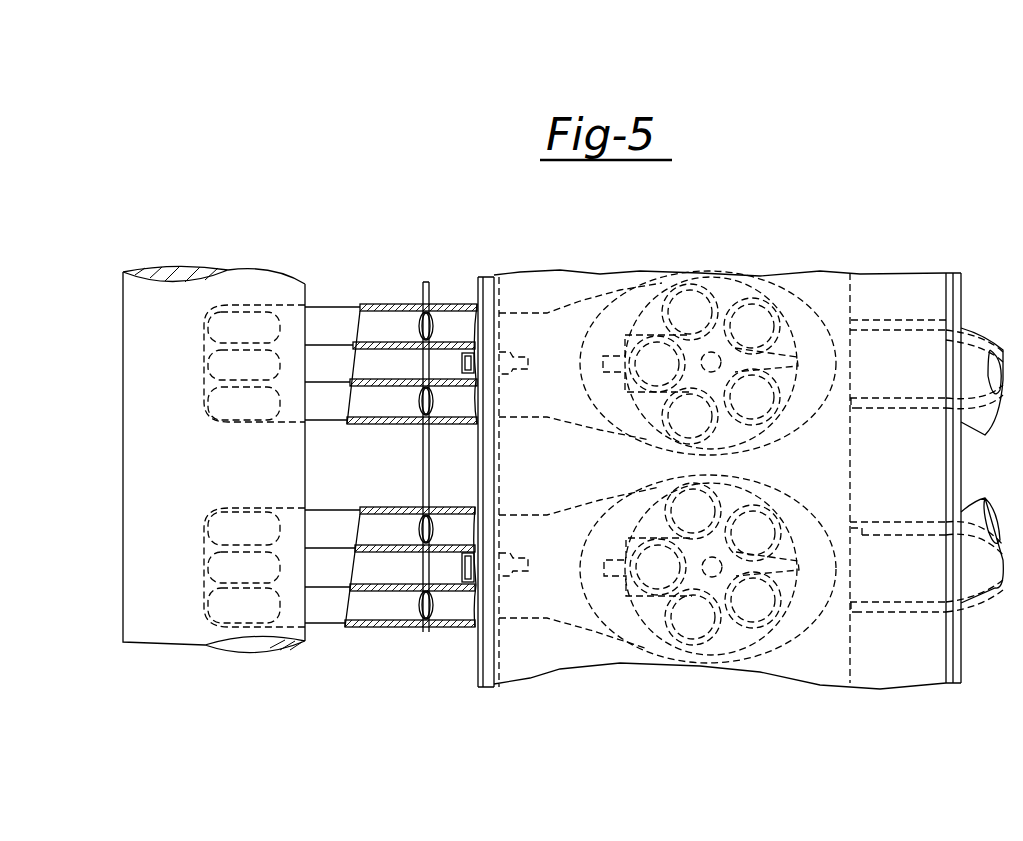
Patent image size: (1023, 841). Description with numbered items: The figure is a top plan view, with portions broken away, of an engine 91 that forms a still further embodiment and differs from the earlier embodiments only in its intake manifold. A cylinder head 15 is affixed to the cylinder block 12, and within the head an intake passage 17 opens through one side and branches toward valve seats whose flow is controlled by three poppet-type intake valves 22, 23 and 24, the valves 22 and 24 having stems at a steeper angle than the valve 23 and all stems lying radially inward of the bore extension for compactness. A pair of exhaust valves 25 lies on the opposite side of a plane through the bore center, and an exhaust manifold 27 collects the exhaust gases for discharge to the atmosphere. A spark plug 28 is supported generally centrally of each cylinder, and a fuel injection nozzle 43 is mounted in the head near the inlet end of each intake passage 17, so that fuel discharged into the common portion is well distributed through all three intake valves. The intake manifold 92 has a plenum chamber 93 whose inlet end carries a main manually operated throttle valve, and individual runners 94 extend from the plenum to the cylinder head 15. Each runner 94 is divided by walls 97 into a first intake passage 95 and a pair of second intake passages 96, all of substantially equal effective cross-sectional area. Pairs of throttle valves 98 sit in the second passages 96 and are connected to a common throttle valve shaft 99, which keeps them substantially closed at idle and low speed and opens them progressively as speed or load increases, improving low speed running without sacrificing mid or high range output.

The cylinder block 12 is at (835, 273).
The cylinder head 15 is at (855, 298).
The intake passage 17 is at (558, 302).
The intake valve 22 is at (684, 437).
The intake valve 23 is at (616, 362).
The intake valve 24 is at (686, 284).
The exhaust valve 25 is at (752, 272).
The exhaust manifold 27 is at (907, 310).
The spark plug 28 is at (761, 463).
The fuel injection nozzle 43 is at (470, 305).
The engine 91 is at (727, 245).
The intake manifold 92 is at (121, 412).
The plenum chamber 93 is at (123, 333).
The runner 94 is at (345, 305).
The first intake passage 95 is at (398, 375).
The second intake passage 96 is at (397, 337).
The wall 97 is at (353, 342).
The throttle valve 98 is at (415, 312).
The throttle valve shaft 99 is at (430, 285).